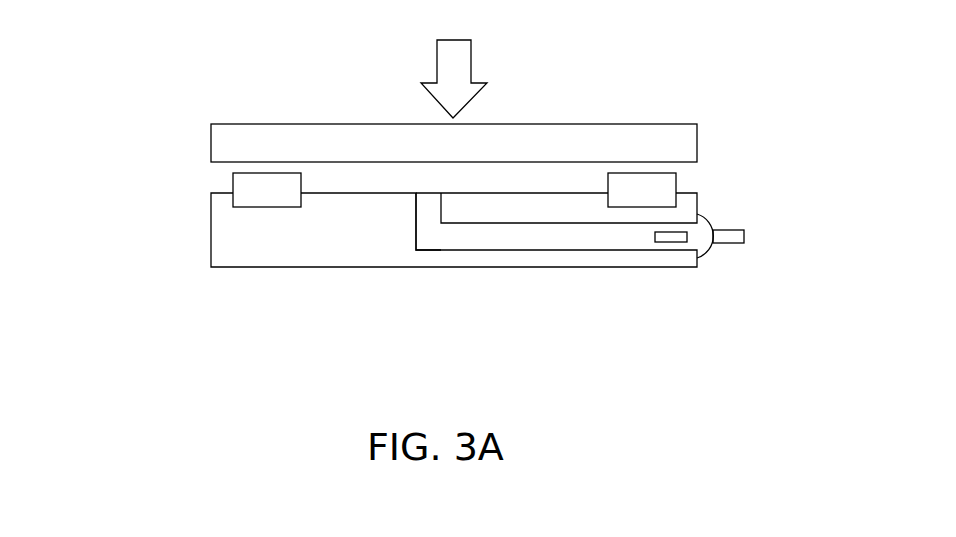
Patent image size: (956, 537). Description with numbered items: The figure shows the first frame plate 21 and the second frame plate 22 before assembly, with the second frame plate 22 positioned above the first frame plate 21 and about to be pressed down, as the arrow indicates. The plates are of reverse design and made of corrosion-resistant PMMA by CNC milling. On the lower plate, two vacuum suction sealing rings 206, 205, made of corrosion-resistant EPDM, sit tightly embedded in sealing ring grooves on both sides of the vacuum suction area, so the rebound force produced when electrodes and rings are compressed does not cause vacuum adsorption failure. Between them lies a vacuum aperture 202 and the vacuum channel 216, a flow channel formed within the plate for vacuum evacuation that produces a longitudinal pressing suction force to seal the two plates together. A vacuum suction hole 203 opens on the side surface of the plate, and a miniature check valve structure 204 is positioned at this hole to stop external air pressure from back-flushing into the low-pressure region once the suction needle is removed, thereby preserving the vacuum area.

The first frame plate 21 is at (235, 148).
The second frame plate 22 is at (235, 247).
The vacuum suction sealing ring 206 is at (250, 190).
The vacuum suction sealing ring 205 is at (653, 197).
The vacuum channel 216 is at (610, 238).
The vacuum aperture 202 is at (428, 202).
The vacuum suction hole 203 is at (667, 247).
The miniature check valve structure 204 is at (702, 240).